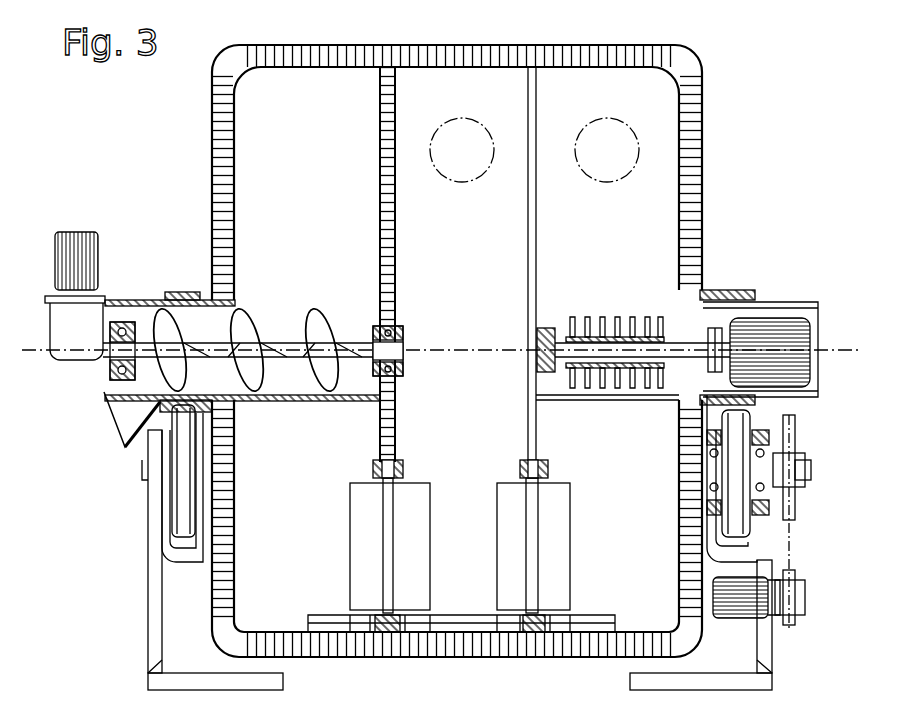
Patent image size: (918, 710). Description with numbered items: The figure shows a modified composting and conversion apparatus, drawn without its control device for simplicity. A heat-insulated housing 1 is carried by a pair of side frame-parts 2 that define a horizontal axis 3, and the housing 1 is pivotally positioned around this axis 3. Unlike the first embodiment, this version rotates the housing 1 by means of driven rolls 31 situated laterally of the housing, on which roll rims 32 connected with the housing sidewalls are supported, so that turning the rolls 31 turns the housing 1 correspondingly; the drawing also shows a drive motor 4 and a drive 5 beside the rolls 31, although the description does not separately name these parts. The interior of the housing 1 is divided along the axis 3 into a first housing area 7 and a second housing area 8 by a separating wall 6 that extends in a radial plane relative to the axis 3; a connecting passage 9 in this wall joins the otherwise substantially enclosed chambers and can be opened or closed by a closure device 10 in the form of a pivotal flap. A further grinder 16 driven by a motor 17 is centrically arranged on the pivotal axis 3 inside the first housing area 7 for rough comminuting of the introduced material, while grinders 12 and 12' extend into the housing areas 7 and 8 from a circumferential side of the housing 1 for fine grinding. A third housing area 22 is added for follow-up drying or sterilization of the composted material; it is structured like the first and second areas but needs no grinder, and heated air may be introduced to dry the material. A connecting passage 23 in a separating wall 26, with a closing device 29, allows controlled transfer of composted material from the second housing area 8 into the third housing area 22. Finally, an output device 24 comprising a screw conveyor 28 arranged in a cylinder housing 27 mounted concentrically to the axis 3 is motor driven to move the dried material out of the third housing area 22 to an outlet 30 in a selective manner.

The housing 1 is at (702, 205).
The side frame-parts 2 is at (148, 616).
The horizontal axis 3 is at (28, 355).
The drive motor 4 is at (742, 610).
The chain drive 5 is at (792, 538).
The separating wall 6 is at (528, 271).
The first housing area 7 is at (612, 227).
The second housing area 8 is at (467, 227).
The connecting passage 9 is at (532, 480).
The closure device 10 is at (562, 517).
The grinder 12 is at (602, 134).
The grinder 12' is at (456, 134).
The further grinder 16 is at (604, 316).
The motor 17 is at (794, 322).
The third housing area 22 is at (332, 227).
The connecting passage 23 is at (390, 480).
The output device 24 is at (157, 270).
The separating wall 26 is at (326, 149).
The cylinder housing 27 is at (300, 401).
The screw conveyor 28 is at (238, 330).
The closing device 29 is at (356, 562).
The outlet 30 is at (120, 448).
The driven rolls 31 is at (180, 506).
The roll rims 32 is at (184, 294).